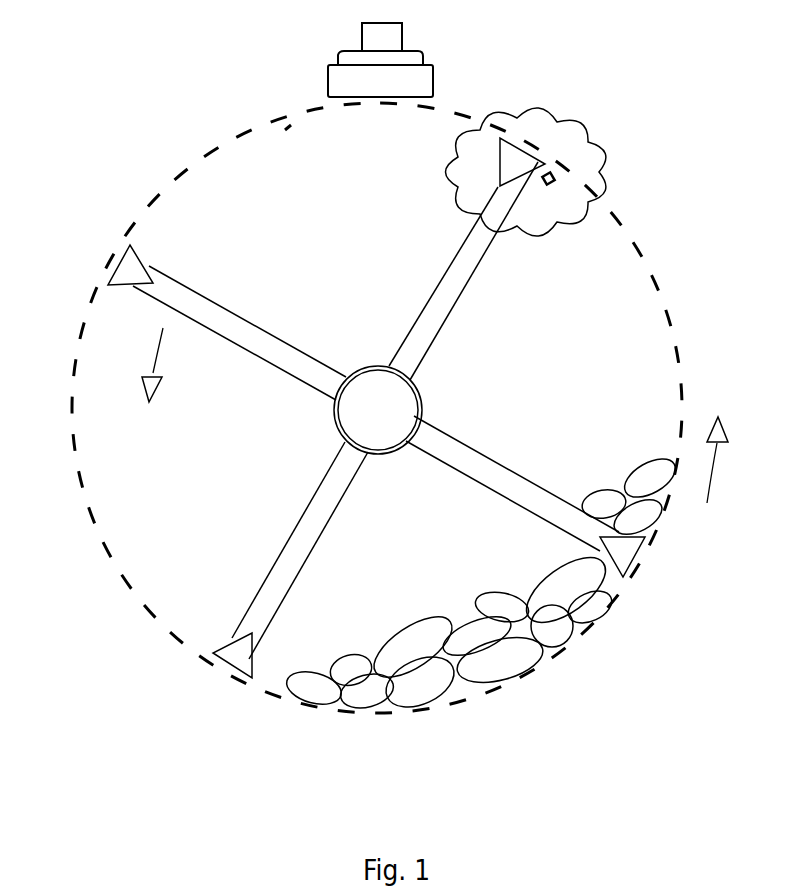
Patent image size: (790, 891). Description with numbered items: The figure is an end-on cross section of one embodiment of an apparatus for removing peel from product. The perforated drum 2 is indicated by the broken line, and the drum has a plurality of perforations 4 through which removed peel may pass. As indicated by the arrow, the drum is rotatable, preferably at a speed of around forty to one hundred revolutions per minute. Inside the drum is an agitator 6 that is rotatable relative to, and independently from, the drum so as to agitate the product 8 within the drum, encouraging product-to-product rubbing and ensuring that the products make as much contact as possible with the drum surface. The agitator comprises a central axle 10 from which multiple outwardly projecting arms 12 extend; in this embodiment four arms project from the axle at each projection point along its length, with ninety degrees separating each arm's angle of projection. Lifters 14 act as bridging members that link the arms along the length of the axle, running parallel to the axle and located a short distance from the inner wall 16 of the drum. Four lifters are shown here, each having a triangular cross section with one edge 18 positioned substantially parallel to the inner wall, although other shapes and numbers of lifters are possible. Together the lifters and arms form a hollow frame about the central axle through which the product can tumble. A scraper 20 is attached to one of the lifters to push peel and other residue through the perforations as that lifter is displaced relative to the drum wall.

The perforated drum 2 is at (554, 651).
The perforations 4 is at (663, 305).
The agitator 6 is at (352, 318).
The product 8 is at (406, 643).
The central axle 10 is at (385, 427).
The arms 12 is at (237, 328).
The lifters 14 is at (130, 263).
The inner wall 16 is at (250, 139).
The edge 18 is at (222, 662).
The scraper 20 is at (556, 173).